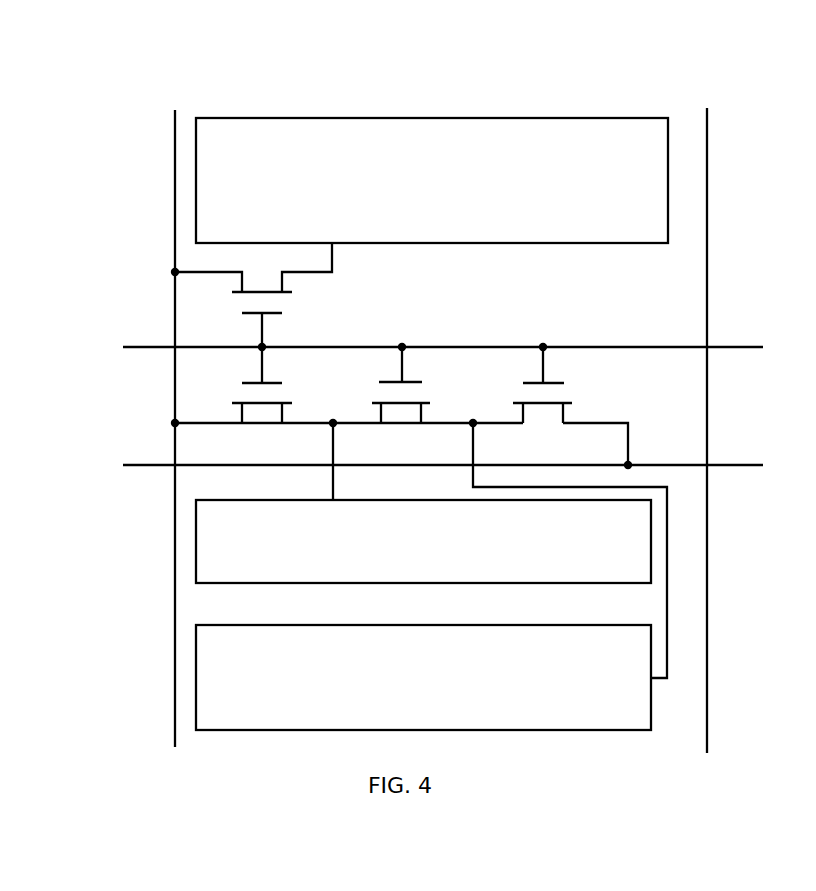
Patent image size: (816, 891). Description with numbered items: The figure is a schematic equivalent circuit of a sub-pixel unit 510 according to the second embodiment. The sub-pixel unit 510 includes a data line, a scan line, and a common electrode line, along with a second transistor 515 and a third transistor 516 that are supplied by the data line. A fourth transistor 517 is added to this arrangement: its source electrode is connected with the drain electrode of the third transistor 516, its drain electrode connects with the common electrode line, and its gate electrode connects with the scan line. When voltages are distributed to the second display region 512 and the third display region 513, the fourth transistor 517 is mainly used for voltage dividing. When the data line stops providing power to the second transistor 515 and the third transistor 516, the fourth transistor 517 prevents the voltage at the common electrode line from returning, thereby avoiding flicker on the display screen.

The sub-pixel unit 510 is at (412, 46).
The second display region 512 is at (423, 541).
The third display region 513 is at (423, 677).
The second transistor 515 is at (224, 391).
The third transistor 516 is at (402, 340).
The fourth transistor 517 is at (543, 340).